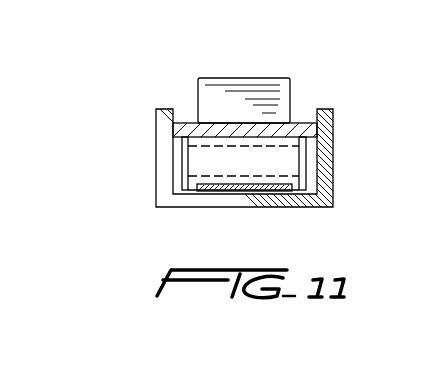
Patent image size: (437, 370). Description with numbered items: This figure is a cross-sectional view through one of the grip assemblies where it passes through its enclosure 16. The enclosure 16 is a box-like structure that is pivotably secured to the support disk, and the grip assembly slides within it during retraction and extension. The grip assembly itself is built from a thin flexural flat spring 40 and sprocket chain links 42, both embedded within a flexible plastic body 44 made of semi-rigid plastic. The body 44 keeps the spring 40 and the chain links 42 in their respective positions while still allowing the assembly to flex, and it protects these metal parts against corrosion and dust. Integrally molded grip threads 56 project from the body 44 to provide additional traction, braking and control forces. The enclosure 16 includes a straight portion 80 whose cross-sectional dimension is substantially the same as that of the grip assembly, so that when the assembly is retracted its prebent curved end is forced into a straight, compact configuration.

The enclosure 16 is at (143, 172).
The flexural flat spring 40 is at (261, 192).
The sprocket chain links 42 is at (215, 151).
The flexible plastic body 44 is at (308, 135).
The grip threads 56 is at (250, 77).
The straight portion 80 is at (332, 171).